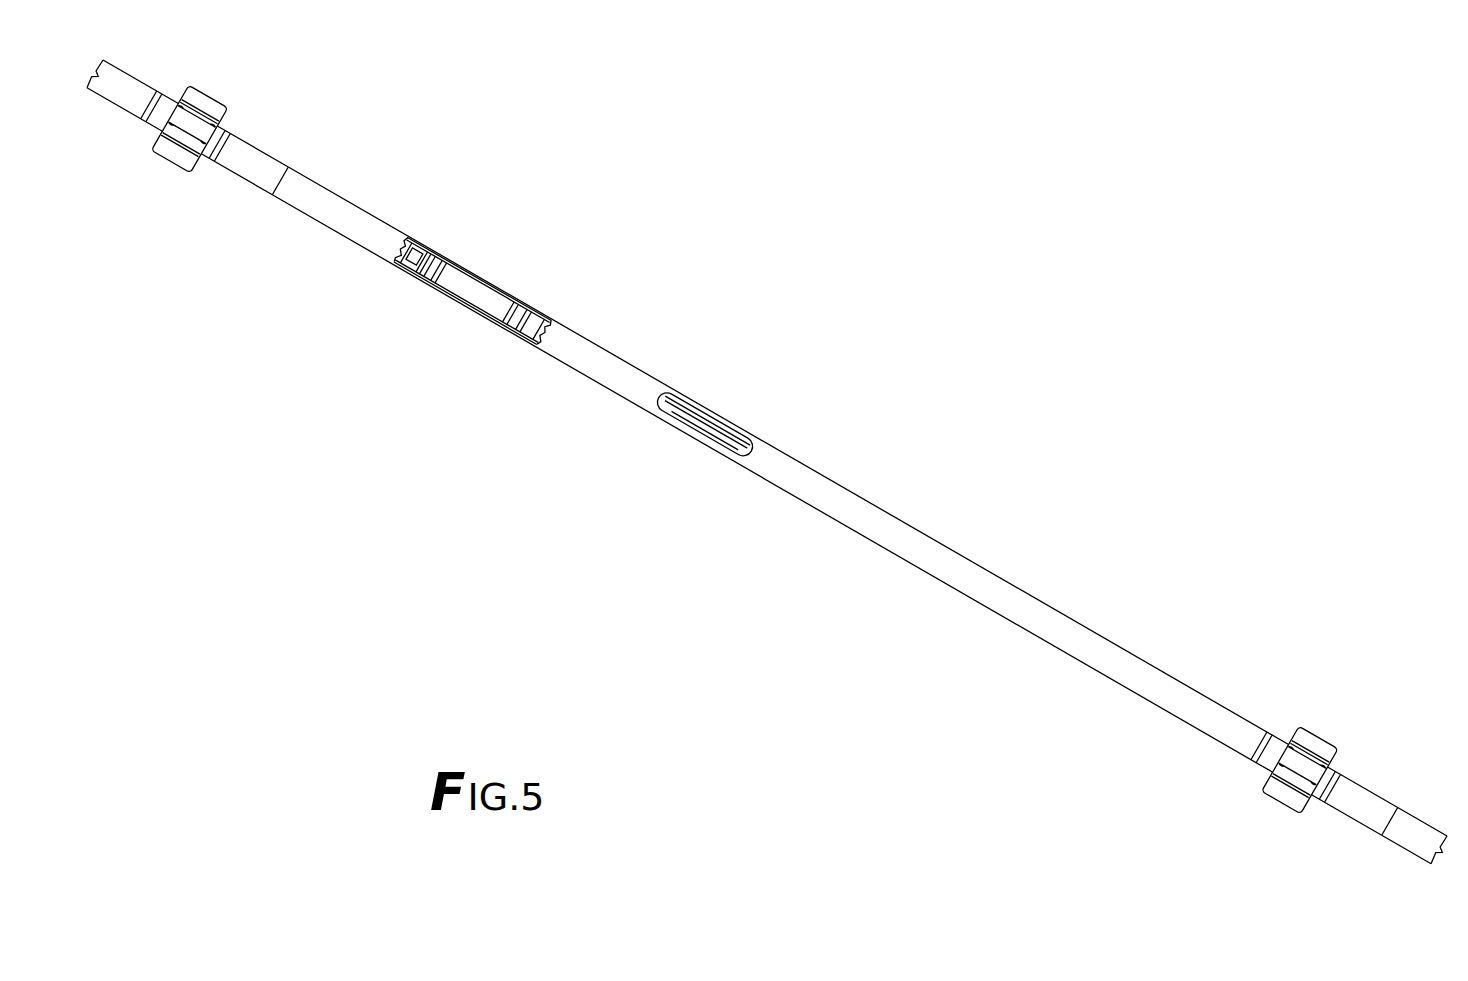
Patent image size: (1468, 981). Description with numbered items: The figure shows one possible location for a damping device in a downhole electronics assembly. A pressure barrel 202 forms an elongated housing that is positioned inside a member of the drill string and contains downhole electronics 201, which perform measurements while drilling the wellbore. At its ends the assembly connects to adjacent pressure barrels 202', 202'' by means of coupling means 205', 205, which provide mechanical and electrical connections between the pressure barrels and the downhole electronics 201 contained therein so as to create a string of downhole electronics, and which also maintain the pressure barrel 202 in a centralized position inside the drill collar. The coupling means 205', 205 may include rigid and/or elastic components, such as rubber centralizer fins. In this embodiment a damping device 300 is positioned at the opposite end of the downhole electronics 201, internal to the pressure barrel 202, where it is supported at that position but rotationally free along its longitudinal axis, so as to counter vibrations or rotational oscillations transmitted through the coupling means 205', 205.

The pressure barrel 202 is at (834, 501).
The pressure barrel 202' is at (187, 160).
The pressure barrel 202'' is at (1345, 823).
The coupling means 205' is at (269, 104).
The coupling means 205 is at (1293, 697).
The damping device 300 is at (504, 293).
The downhole electronics 201 is at (725, 433).